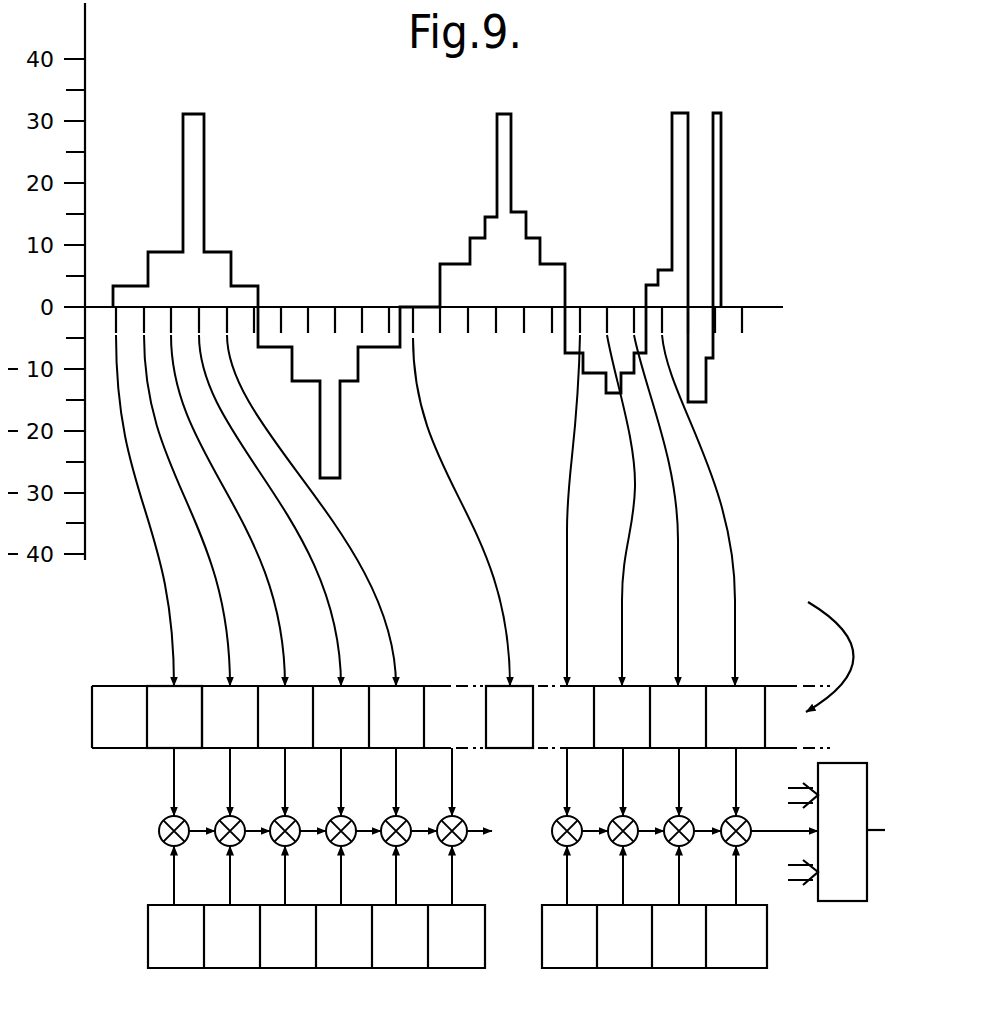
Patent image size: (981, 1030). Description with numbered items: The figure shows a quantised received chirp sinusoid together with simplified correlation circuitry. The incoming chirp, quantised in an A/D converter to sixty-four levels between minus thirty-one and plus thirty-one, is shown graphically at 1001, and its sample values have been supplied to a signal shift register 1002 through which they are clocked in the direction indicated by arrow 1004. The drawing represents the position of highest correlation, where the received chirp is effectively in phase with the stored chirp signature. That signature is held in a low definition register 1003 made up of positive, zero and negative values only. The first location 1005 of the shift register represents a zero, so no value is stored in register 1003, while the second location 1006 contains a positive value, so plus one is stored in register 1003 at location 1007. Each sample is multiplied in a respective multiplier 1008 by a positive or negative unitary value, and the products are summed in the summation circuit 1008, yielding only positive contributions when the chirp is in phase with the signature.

The quantised incoming chirp 1001 is at (513, 140).
The shift register (right portion) 1002 is at (797, 686).
The low definition register 1003 is at (485, 950).
The arrow 1004 is at (833, 613).
The first location 1005 is at (117, 686).
The second location 1006 is at (160, 748).
The reference register location 1007 is at (175, 966).
The multipliers and summation circuit 1008 is at (162, 838).